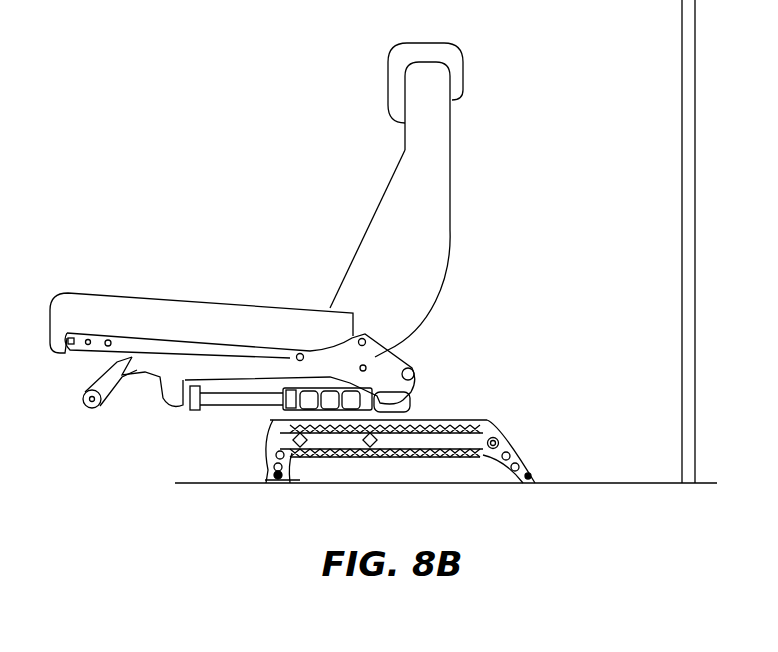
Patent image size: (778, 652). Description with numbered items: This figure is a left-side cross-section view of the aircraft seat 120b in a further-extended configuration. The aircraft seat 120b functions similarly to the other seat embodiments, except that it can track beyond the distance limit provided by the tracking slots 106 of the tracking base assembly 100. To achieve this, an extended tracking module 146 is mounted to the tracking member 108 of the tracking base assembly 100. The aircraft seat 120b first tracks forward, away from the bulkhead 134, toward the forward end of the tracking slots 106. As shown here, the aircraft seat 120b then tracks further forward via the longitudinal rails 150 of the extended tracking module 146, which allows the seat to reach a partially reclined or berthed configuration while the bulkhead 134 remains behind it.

The aircraft seat 120b is at (112, 78).
The bulkhead 134 is at (681, 163).
The extended tracking module 146 is at (292, 385).
The longitudinal rails 150 is at (228, 403).
The tracking slots 106 is at (428, 438).
The tracking member 108 is at (273, 418).
The tracking base assembly 100 is at (490, 430).